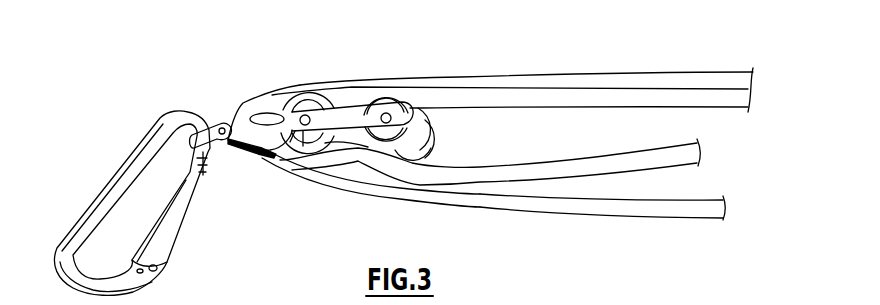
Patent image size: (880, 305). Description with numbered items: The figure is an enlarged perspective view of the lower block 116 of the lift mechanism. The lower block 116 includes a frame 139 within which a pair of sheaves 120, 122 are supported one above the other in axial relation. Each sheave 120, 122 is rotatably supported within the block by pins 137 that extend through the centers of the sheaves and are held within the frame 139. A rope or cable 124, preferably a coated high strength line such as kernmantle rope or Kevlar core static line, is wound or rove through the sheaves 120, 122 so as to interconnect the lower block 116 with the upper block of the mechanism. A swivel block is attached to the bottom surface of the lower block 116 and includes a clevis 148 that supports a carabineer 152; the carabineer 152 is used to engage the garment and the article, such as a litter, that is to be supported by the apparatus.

The lower block 116 is at (265, 218).
The sheave 120 is at (321, 170).
The sheave 122 is at (413, 137).
The rope or cable 124 is at (576, 216).
The pins 137 is at (310, 116).
The frame 139 is at (258, 106).
The clevis 148 is at (220, 122).
The carabineer 152 is at (98, 185).